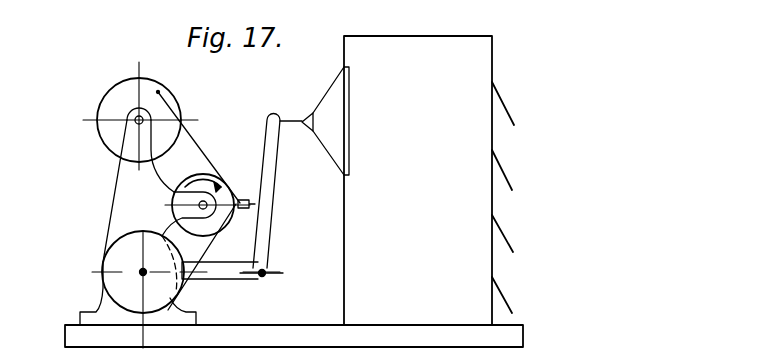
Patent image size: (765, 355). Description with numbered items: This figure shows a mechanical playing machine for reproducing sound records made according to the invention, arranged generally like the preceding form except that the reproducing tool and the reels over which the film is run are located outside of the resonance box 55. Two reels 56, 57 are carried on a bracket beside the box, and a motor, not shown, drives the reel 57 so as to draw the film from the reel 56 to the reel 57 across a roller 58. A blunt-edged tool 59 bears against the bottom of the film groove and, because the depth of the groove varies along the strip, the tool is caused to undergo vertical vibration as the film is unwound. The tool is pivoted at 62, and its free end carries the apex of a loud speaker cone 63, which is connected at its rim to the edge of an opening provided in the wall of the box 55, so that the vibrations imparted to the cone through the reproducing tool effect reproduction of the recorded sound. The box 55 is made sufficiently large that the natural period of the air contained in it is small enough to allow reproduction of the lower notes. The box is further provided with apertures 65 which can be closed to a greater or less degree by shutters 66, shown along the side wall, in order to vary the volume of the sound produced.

The resonance box 55 is at (467, 190).
The reel 56 is at (158, 105).
The reel 57 is at (128, 261).
The roller 58 is at (212, 178).
The blunt-edged tool 59 is at (263, 212).
The pivot 62 is at (262, 273).
The loud speaker cone 63 is at (335, 140).
The apertures 65 is at (265, 206).
The shutters 66 is at (505, 109).